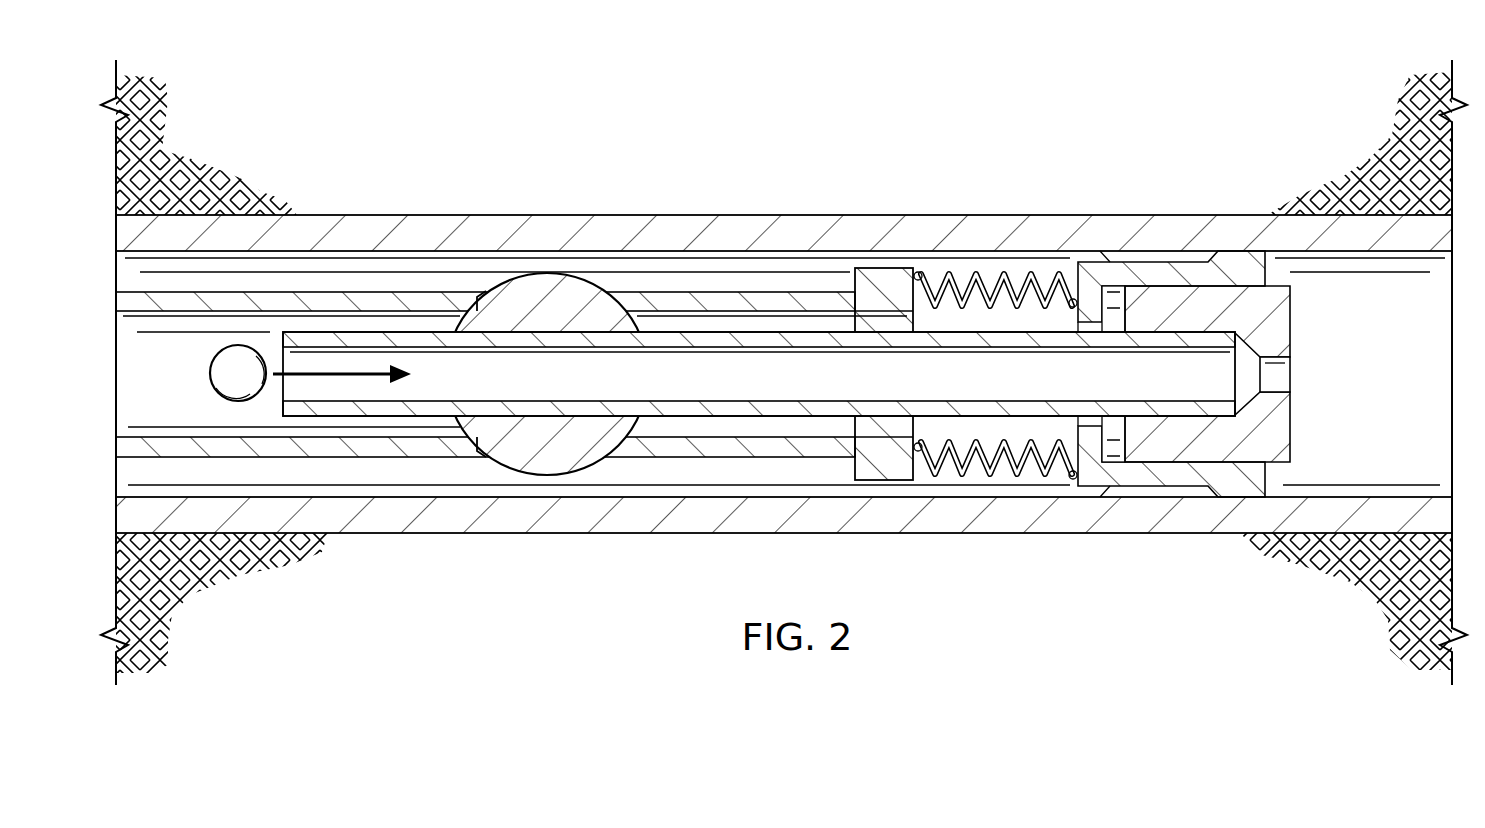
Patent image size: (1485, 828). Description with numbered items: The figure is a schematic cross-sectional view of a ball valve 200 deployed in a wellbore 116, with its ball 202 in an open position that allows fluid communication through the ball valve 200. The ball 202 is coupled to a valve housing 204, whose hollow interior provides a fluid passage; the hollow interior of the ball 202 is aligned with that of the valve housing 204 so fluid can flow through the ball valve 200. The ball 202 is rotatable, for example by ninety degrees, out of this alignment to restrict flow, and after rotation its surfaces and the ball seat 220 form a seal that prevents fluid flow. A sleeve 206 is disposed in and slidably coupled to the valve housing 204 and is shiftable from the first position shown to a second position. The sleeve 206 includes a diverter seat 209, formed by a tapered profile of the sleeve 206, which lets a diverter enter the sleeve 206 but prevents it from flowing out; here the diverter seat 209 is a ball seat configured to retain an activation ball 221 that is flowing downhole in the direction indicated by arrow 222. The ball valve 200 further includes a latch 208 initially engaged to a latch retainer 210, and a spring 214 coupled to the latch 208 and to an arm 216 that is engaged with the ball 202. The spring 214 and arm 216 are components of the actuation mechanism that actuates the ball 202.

The ball valve 200 is at (784, 372).
The wellbore 116 is at (427, 232).
The ball 202 is at (545, 285).
The valve housing 204 is at (800, 440).
The sleeve 206 is at (1282, 415).
The latch 208 is at (1237, 262).
The diverter seat 209 is at (1247, 395).
The latch retainer 210 is at (1123, 258).
The spring 214 is at (1012, 470).
The arm 216 is at (672, 455).
The ball seat 220 is at (470, 478).
The activation ball 221 is at (210, 372).
The arrow 222 is at (365, 378).